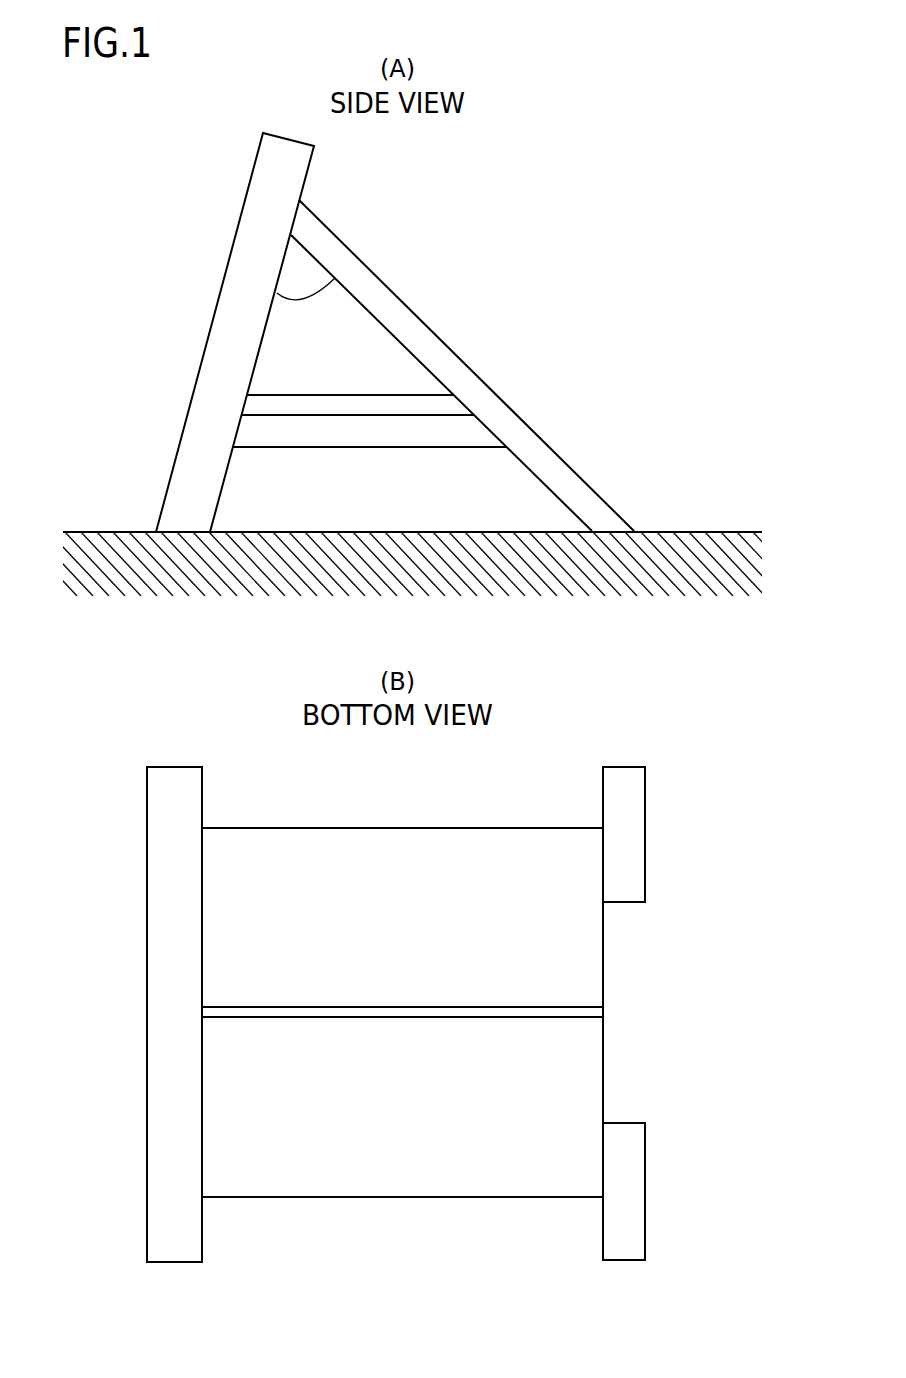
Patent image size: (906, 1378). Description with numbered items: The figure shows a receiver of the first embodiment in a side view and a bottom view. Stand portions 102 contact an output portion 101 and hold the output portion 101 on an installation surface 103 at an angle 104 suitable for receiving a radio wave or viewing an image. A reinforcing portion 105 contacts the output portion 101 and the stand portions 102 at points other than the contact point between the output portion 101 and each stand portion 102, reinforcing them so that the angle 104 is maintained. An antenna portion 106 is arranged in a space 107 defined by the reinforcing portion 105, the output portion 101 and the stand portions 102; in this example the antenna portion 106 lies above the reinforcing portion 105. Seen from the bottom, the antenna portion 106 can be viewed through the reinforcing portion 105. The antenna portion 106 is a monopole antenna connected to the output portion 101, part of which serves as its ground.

The output portion 101 is at (222, 285).
The stand portions 102 is at (465, 360).
The installation surface 103 is at (735, 531).
The angle 104 is at (307, 292).
The reinforcing portion 105 is at (390, 450).
The antenna portion 106 is at (348, 395).
The space 107 is at (371, 343).